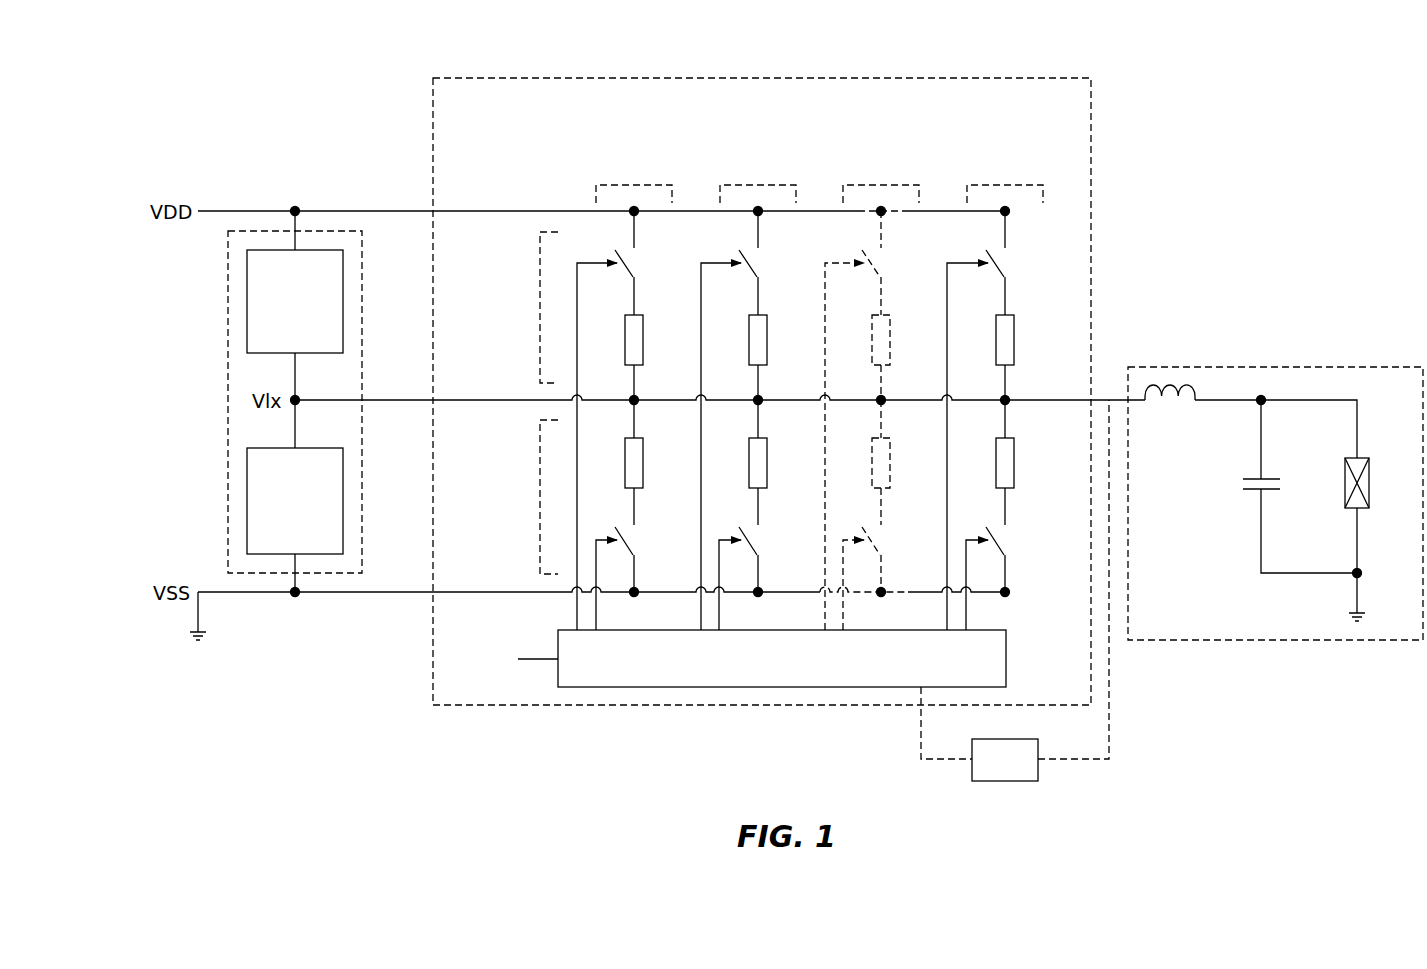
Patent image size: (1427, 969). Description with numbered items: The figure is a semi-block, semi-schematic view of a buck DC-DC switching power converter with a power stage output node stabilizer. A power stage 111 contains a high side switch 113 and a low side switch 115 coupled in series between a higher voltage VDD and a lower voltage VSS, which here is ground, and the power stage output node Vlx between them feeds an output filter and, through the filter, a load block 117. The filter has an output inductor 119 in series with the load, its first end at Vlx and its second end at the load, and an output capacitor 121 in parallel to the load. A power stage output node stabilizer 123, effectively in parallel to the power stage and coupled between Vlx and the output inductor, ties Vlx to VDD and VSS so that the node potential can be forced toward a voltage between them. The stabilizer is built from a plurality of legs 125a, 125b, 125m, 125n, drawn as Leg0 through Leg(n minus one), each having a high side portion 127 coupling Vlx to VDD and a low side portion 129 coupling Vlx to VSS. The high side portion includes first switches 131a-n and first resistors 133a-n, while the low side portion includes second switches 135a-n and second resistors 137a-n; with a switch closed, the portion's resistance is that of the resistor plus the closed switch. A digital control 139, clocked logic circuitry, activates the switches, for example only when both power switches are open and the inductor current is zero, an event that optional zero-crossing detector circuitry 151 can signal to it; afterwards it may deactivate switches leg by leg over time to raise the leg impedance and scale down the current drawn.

The power stage 111 is at (228, 268).
The high side switch 113 is at (247, 306).
The low side switch 115 is at (247, 500).
The load block 117 is at (1383, 365).
The output inductor 119 is at (1178, 387).
The output capacitor 121 is at (1253, 489).
The power stage output node stabilizer 123 is at (498, 705).
The leg 125a is at (672, 173).
The leg 125b is at (796, 173).
The leg 125m is at (920, 173).
The leg 125n is at (1053, 172).
The high side portion 127 is at (478, 300).
The low side portion 129 is at (478, 492).
The first switches 131a-n is at (586, 253).
The first resistors 133a-n is at (605, 350).
The second switches 135a-n is at (591, 528).
The second resistors 137a-n is at (605, 452).
The digital control 139 is at (697, 688).
The zero-crossing detector circuitry 151 is at (1008, 781).